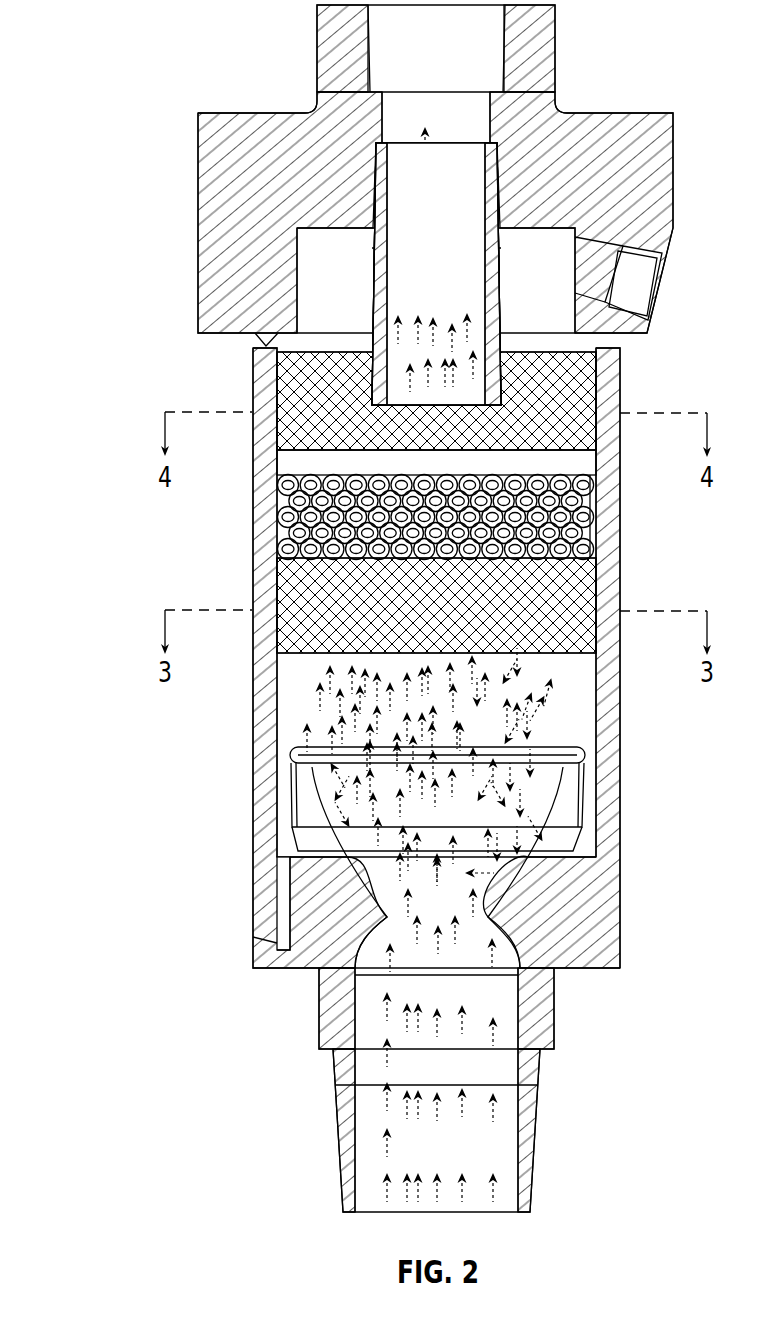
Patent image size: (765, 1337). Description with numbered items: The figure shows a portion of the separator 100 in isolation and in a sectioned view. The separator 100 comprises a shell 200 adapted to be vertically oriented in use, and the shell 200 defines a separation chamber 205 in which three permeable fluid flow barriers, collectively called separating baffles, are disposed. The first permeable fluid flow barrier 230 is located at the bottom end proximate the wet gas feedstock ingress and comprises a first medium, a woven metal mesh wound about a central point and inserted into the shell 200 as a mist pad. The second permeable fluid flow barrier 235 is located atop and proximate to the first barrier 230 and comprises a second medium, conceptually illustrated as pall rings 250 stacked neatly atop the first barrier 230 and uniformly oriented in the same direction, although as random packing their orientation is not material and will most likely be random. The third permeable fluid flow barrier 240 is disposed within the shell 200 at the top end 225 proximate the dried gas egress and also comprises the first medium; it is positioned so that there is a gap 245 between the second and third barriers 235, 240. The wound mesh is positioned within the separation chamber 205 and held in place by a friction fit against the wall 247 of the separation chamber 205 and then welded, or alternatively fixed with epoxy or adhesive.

The separator 100 is at (105, 337).
The shell 200 is at (252, 408).
The separation chamber 205 is at (440, 460).
The top end 225 is at (620, 356).
The first permeable fluid flow barrier 230 is at (290, 613).
The second permeable fluid flow barrier 235 is at (439, 514).
The third permeable fluid flow barrier 240 is at (290, 414).
The gap 245 is at (292, 460).
The wall 247 is at (594, 461).
The pall rings 250 is at (588, 500).